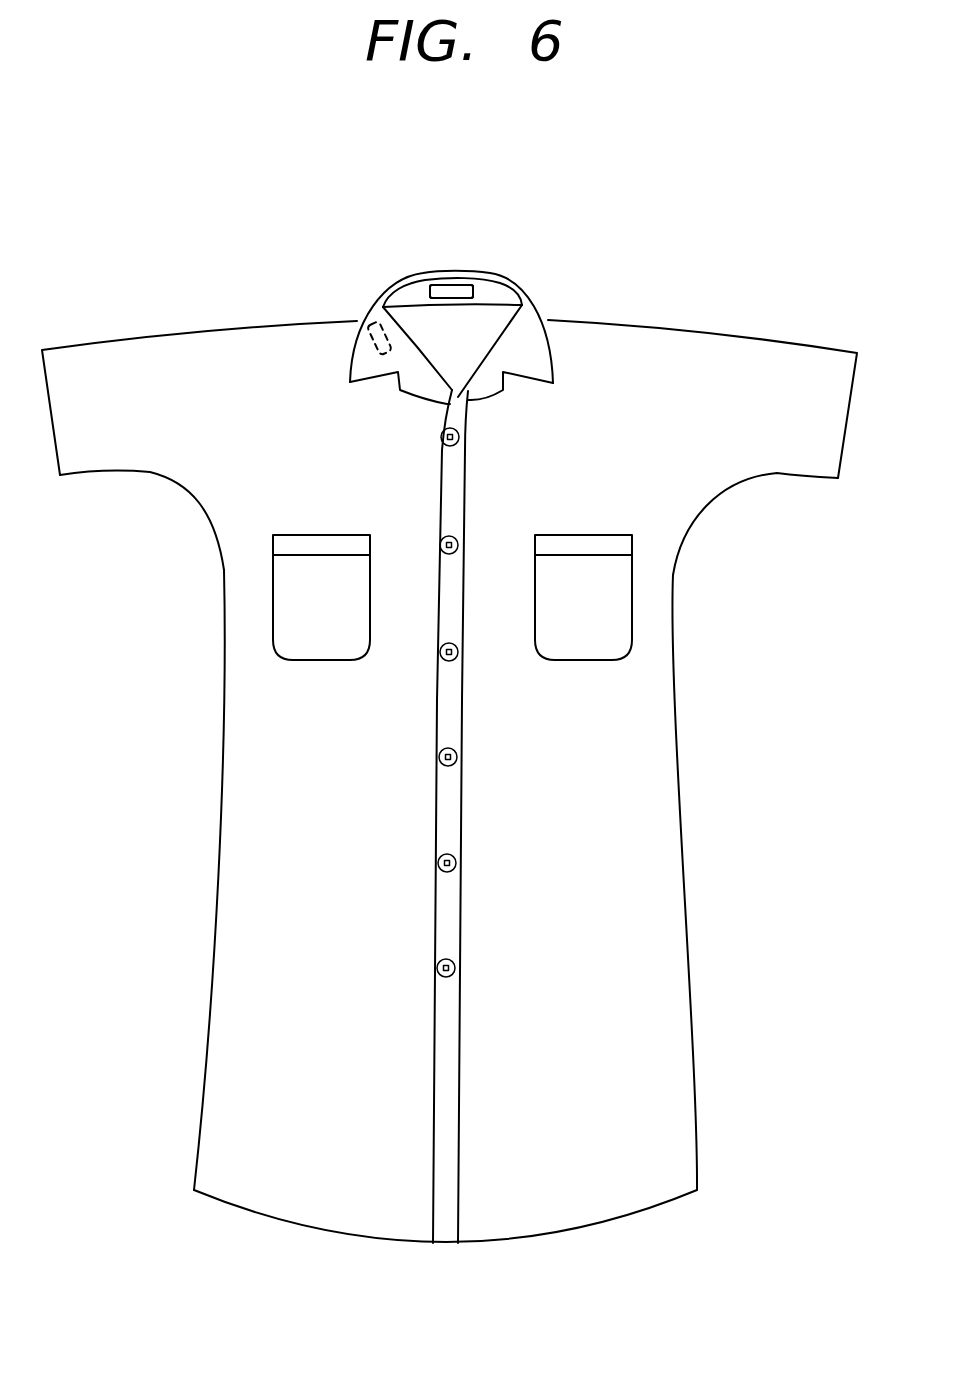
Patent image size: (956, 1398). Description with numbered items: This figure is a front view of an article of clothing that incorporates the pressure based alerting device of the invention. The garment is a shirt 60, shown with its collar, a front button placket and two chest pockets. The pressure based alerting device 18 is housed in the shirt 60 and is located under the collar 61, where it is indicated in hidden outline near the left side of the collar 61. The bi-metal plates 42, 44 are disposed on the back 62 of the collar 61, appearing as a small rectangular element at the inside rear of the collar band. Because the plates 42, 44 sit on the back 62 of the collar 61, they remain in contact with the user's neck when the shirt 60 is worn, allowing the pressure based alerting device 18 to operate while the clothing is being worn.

The shirt 60 is at (93, 271).
The collar 61 is at (363, 352).
The back of collar 62 is at (492, 293).
The bi-metal plate 42 is at (452, 292).
The bi-metal plate 44 is at (452, 292).
The pressure based alerting device 18 is at (368, 322).